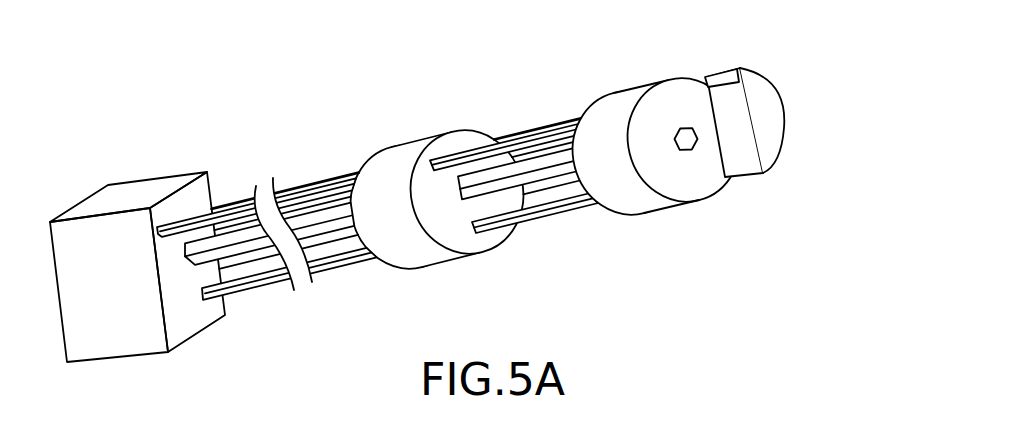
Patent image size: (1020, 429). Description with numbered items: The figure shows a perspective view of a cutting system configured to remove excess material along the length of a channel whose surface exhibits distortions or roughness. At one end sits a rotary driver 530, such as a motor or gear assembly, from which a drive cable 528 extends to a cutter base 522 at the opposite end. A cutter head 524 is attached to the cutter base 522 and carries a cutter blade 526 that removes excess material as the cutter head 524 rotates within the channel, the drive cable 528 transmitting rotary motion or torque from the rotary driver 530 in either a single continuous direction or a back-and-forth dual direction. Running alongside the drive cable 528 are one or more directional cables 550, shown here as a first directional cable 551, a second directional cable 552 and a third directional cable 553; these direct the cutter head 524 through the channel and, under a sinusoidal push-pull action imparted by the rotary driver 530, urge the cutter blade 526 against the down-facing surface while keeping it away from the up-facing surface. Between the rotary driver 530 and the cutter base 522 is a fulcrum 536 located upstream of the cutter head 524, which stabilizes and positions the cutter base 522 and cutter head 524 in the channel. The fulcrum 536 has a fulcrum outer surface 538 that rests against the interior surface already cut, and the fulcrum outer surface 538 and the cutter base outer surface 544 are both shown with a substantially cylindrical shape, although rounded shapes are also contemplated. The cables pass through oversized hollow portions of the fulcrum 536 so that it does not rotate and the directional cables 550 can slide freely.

The cutter base 522 is at (628, 98).
The cutter head 524 is at (768, 103).
The cutter blade 526 is at (722, 82).
The drive cable 528 is at (490, 180).
The rotary driver 530 is at (128, 197).
The fulcrum 536 is at (400, 150).
The fulcrum outer surface 538 is at (420, 267).
The cutter base outer surface 544 is at (668, 207).
The directional cables 550 is at (520, 223).
The first directional cable 551 is at (248, 199).
The second directional cable 552 is at (190, 220).
The third directional cable 553 is at (248, 290).